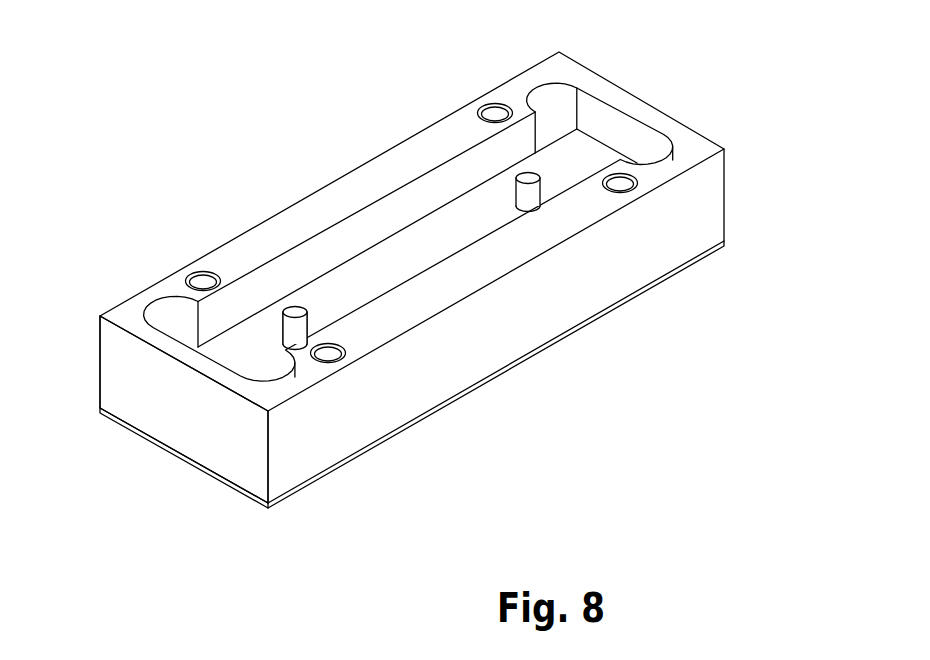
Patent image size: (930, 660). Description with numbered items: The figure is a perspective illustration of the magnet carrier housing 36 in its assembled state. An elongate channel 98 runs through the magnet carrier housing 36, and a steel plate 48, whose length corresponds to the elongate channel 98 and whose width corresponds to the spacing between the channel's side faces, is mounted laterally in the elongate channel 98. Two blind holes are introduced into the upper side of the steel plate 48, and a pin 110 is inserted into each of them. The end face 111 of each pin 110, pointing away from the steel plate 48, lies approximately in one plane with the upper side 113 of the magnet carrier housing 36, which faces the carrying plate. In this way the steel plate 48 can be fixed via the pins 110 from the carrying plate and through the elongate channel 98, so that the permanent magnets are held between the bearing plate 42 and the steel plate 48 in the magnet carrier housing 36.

The magnet carrier housing 36 is at (699, 199).
The bearing plate 42 is at (178, 458).
The steel plate 48 is at (372, 268).
The elongate channel 98 is at (617, 117).
The pin 110 is at (284, 334).
The end face 111 is at (296, 307).
The upper side 113 is at (133, 313).